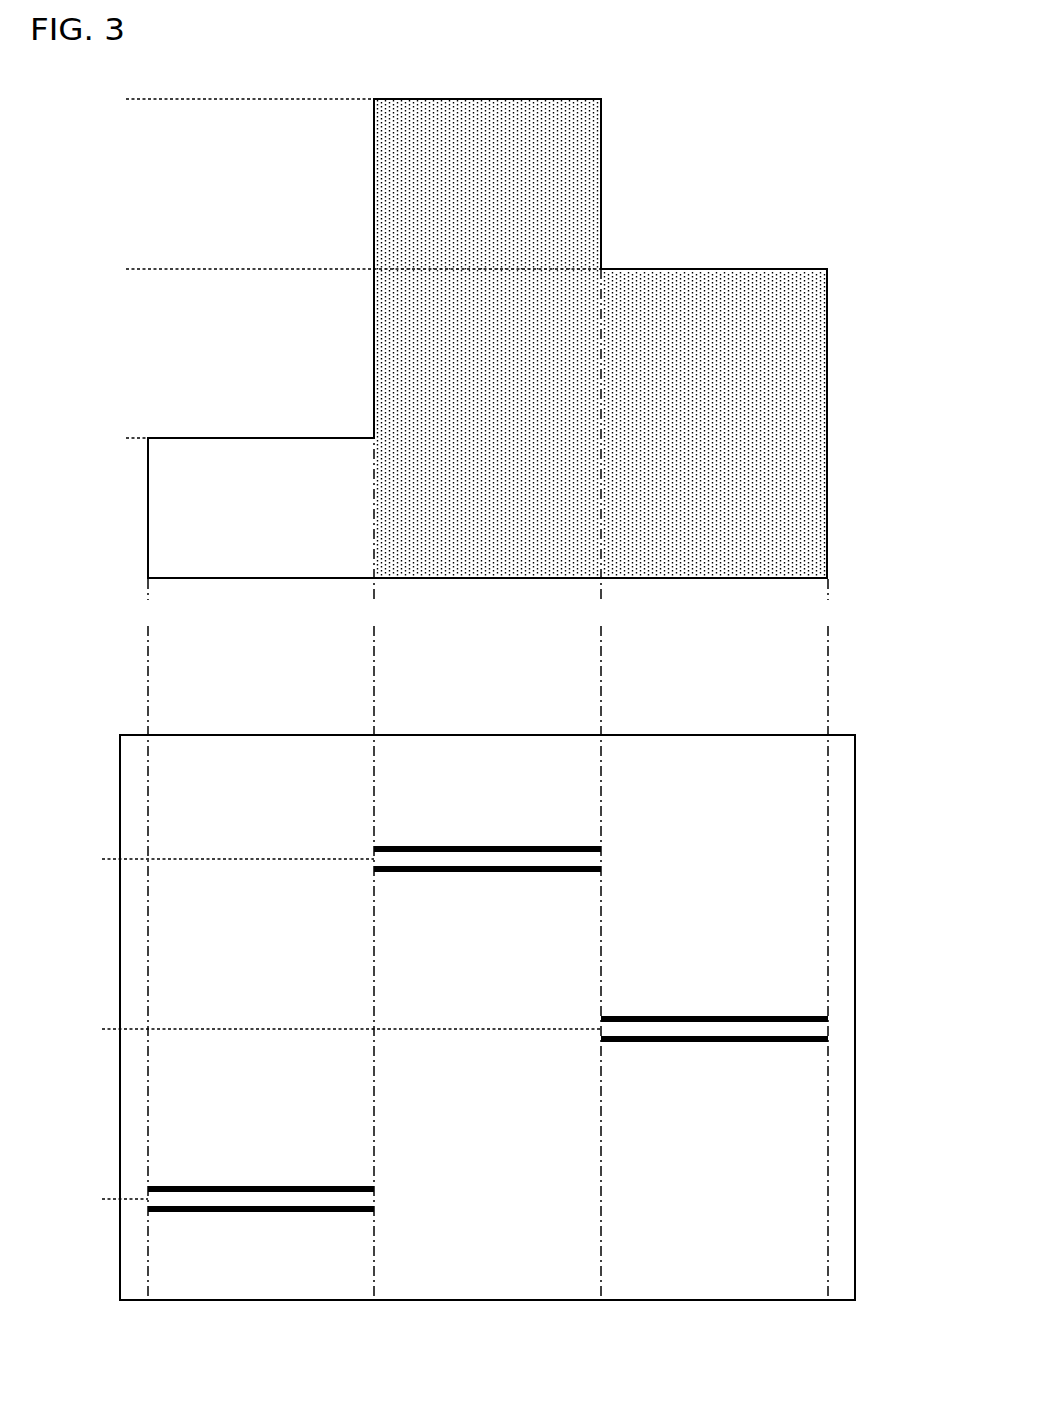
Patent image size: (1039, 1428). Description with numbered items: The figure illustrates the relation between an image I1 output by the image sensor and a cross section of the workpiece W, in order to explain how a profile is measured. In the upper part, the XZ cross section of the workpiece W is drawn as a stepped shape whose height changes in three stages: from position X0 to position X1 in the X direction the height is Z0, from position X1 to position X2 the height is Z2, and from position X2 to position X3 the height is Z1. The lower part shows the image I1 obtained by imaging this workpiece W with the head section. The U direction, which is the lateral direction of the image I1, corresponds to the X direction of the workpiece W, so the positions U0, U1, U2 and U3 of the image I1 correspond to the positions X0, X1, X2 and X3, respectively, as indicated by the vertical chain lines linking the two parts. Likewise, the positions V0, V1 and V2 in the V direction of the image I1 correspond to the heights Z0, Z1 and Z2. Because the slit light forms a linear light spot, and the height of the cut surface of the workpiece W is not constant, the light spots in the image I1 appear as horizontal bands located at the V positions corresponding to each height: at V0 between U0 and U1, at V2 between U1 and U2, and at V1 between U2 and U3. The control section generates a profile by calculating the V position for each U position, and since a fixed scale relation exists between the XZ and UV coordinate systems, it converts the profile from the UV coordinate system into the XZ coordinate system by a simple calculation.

The workpiece W is at (828, 283).
The image I1 is at (856, 735).
The height Z0 is at (114, 439).
The height Z1 is at (340, 269).
The height Z2 is at (227, 100).
The position X0 is at (147, 939).
The position X1 is at (373, 784).
The position X2 is at (600, 784).
The position X3 is at (833, 939).
The position U0 is at (148, 1329).
The position U1 is at (374, 1329).
The position U2 is at (601, 1329).
The position U3 is at (834, 1329).
The position V0 is at (216, 1199).
The position V1 is at (443, 1029).
The position V2 is at (329, 859).